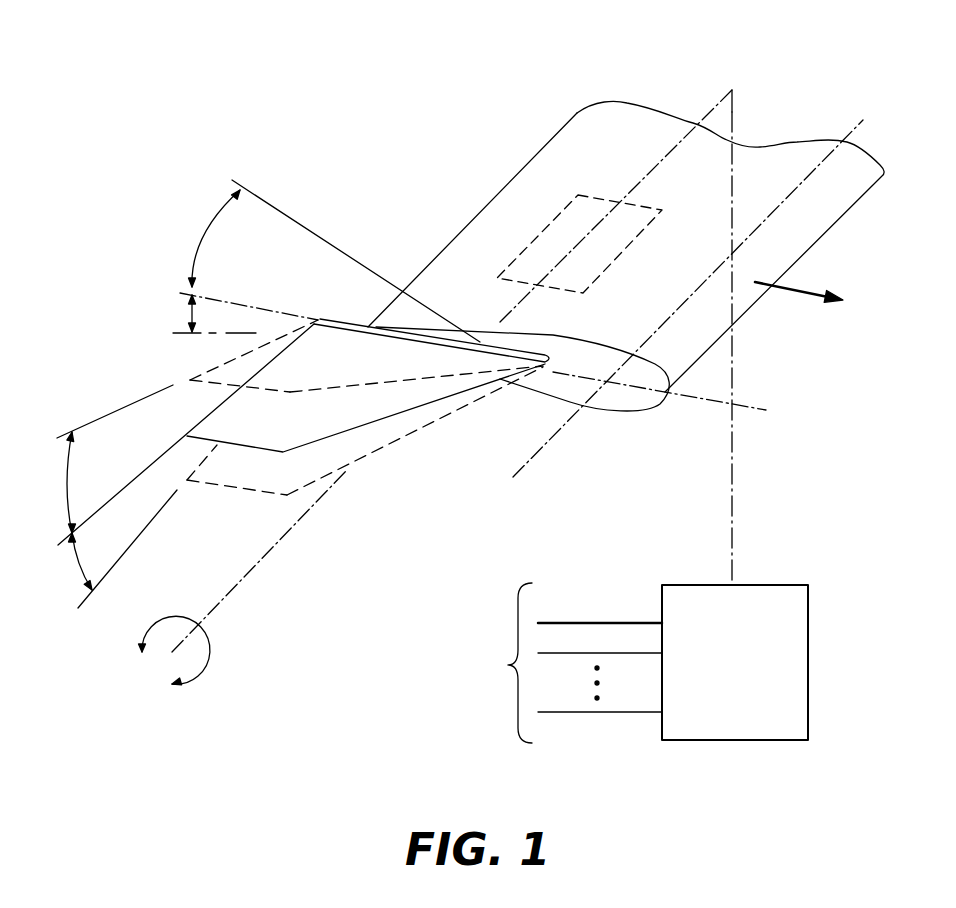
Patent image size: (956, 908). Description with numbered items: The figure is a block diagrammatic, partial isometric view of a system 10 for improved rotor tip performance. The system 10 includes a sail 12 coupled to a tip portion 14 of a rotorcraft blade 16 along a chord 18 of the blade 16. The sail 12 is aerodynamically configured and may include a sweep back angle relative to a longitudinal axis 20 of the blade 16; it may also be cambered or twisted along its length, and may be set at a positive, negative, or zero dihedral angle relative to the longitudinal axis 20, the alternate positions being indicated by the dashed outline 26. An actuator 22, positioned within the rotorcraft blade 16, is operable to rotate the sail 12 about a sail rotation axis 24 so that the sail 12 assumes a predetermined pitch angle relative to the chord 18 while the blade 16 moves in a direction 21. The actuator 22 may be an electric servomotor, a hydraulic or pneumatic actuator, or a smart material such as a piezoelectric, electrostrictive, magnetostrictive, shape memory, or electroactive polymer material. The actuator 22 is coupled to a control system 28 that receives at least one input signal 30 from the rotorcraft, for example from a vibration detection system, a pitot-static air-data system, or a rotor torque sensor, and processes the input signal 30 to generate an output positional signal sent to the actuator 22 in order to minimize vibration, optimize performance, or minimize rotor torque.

The system 10 is at (473, 387).
The sail 12 is at (357, 428).
The tip portion 14 is at (650, 413).
The rotorcraft blade 16 is at (867, 166).
The chord 18 is at (762, 406).
The longitudinal axis 20 is at (525, 465).
The direction 21 is at (800, 287).
The actuator 22 is at (581, 252).
The sail rotation axis 24 is at (226, 598).
The alternate blade position 26 is at (190, 381).
The control system 28 is at (748, 665).
The input signal 30 is at (510, 665).